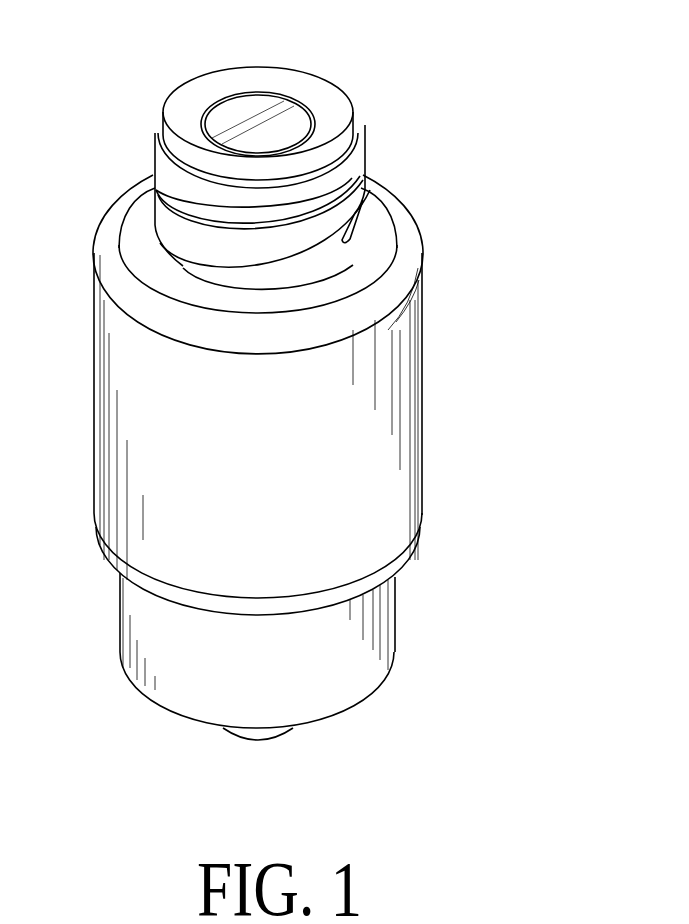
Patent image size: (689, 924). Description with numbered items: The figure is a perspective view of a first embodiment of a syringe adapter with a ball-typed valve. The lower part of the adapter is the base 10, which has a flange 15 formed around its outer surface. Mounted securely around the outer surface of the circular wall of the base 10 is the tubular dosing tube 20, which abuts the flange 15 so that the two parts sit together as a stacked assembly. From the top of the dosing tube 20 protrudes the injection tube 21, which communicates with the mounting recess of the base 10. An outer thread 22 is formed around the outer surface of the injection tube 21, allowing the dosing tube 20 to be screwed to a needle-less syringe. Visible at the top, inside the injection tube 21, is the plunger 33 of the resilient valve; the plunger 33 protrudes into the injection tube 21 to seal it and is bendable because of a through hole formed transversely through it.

The base 10 is at (355, 697).
The flange 15 is at (115, 553).
The dosing tube 20 is at (397, 438).
The injection tube 21 is at (317, 93).
The outer thread 22 is at (350, 192).
The plunger 33 is at (240, 110).